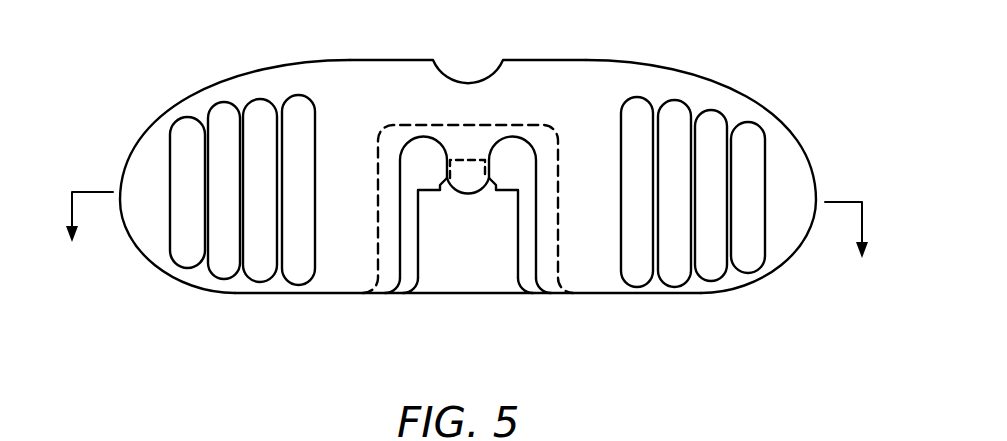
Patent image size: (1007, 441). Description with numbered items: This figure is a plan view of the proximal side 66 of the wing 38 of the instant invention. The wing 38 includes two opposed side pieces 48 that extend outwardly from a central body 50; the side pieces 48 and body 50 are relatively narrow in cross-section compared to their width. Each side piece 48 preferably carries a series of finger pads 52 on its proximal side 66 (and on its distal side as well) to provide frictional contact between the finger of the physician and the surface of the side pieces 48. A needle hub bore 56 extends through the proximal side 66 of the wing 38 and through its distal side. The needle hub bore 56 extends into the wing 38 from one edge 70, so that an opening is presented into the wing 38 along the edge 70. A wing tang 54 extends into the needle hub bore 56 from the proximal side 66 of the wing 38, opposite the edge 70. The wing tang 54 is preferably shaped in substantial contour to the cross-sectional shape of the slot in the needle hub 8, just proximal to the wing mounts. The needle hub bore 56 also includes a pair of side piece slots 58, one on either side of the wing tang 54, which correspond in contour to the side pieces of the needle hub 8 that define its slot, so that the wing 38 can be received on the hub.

The wing 38 is at (198, 324).
The side pieces 48 is at (137, 145).
The central body 50 is at (463, 123).
The finger pads 52 is at (180, 248).
The wing tang 54 is at (453, 192).
The needle hub bore 56 is at (448, 284).
The side piece slots 58 is at (417, 153).
The proximal side 66 is at (340, 285).
The edge 70 is at (553, 294).
The needle hub 8 is at (467, 245).